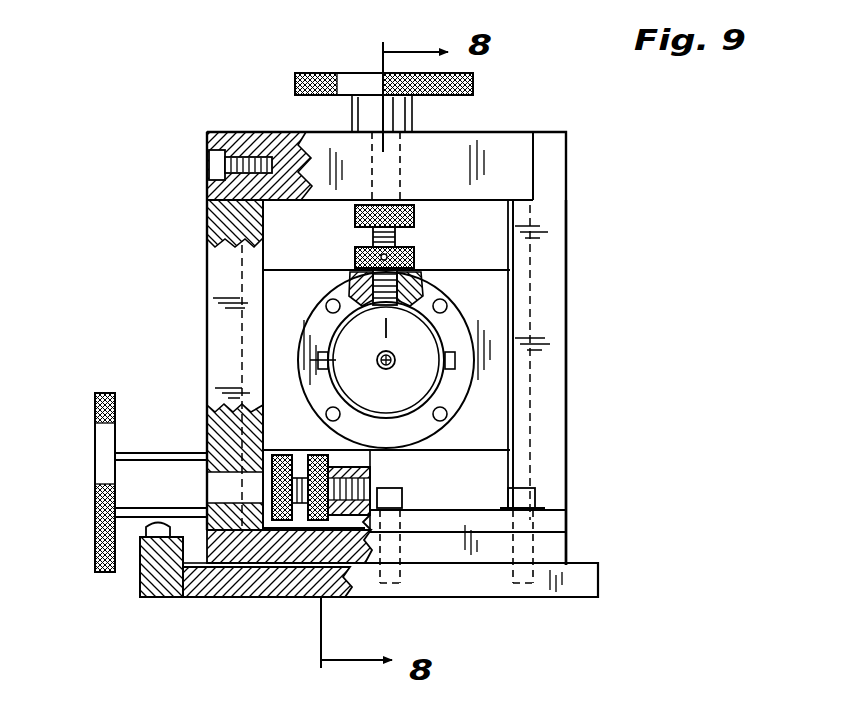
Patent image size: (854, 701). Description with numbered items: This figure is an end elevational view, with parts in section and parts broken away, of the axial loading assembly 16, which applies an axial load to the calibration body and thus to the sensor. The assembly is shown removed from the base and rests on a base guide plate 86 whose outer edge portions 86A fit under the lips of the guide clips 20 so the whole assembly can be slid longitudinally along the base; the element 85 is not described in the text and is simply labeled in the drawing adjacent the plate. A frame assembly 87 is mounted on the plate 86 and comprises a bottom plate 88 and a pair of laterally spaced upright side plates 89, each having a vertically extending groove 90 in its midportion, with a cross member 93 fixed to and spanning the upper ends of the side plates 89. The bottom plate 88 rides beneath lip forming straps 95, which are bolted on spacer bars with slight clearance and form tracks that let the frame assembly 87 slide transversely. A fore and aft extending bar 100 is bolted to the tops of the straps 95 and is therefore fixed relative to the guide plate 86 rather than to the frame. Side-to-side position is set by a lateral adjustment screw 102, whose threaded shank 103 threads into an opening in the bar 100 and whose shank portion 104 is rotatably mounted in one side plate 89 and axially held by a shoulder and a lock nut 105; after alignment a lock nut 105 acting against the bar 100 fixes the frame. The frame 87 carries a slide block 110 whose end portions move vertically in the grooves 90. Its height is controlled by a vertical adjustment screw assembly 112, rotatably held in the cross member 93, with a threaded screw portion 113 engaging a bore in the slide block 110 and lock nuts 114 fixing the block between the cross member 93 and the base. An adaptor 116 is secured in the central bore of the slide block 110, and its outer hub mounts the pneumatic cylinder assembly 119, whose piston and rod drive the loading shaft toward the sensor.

The axial loading assembly 16 is at (260, 121).
The guide clips 20 is at (148, 577).
The base 85 is at (604, 569).
The base guide plate 86 is at (498, 598).
The outer edge portions 86A is at (147, 601).
The frame assembly 87 is at (580, 276).
The bottom plate 88 is at (553, 545).
The upright side plates 89 is at (555, 195).
The vertically extending groove 90 is at (536, 322).
The cross member 93 is at (492, 148).
The lip forming strap 95 is at (430, 521).
The fore and aft extending bar 100 is at (367, 468).
The lateral adjustment screw 102 is at (180, 450).
The threaded shank 103 is at (348, 467).
The shank portion 104 is at (223, 484).
The lock nut 105 is at (304, 460).
The slide block 110 is at (473, 270).
The vertical adjustment screw assembly 112 is at (418, 118).
The threaded screw portion 113 is at (420, 285).
The lock nuts 114 is at (355, 218).
The adaptor 116 is at (450, 396).
The pneumatic cylinder assembly 119 is at (357, 333).